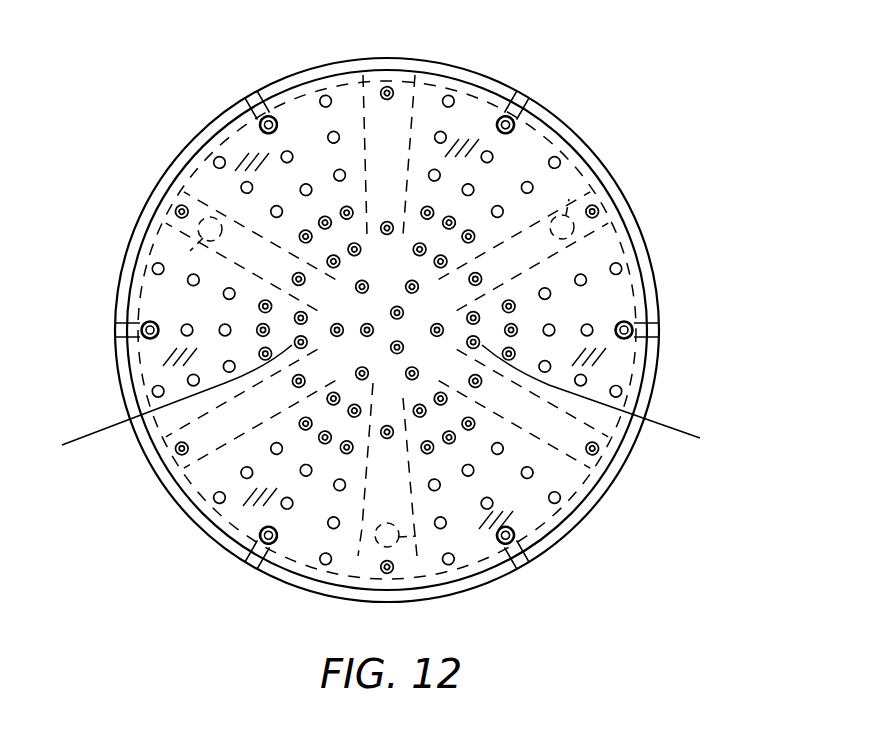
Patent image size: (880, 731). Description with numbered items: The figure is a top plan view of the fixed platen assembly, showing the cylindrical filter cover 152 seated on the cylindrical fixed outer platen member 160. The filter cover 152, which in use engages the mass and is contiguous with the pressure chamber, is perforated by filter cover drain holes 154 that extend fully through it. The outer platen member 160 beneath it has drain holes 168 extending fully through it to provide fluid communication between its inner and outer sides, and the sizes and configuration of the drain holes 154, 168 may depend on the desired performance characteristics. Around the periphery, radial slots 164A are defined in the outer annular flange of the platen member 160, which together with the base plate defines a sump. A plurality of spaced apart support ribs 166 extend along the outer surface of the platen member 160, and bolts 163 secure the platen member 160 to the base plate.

The filter cover 152 is at (367, 97).
The fixed outer platen member 160 is at (402, 65).
The bolts 163 is at (500, 265).
The support ribs 166 is at (190, 240).
The drain holes 168 is at (487, 150).
The radial slots 164A is at (660, 338).
The filter cover drain holes 154 is at (380, 404).